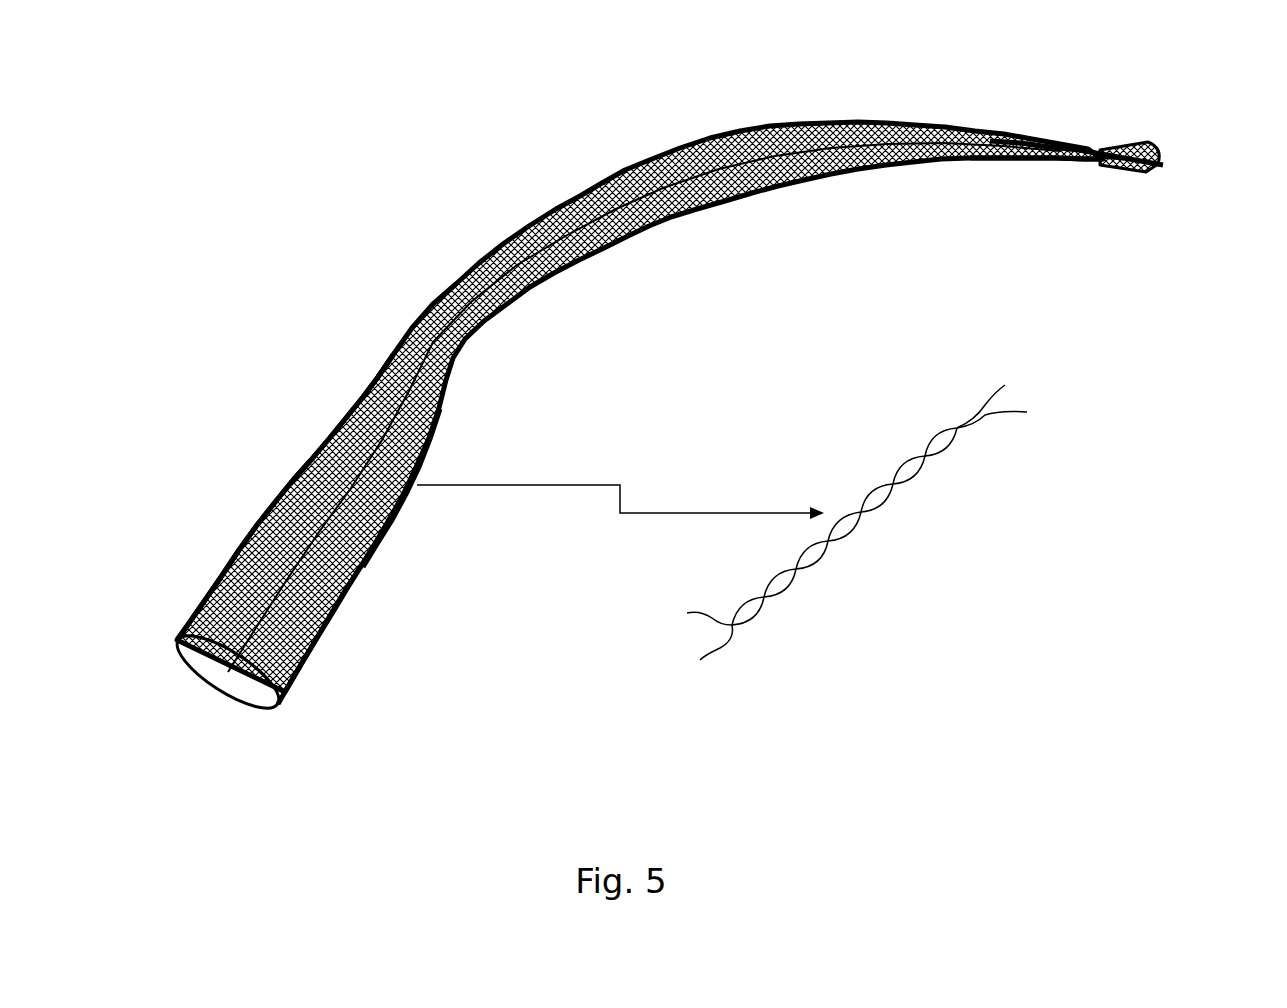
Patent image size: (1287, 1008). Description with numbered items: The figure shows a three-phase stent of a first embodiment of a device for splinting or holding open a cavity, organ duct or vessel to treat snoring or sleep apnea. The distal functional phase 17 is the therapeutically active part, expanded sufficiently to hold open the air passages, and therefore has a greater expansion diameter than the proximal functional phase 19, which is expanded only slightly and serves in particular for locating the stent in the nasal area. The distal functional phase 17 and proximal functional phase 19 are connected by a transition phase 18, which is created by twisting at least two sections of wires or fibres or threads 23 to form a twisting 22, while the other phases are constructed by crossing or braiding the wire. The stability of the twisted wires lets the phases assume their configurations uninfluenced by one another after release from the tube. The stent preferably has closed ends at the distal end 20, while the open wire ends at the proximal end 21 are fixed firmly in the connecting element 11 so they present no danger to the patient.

The connecting element 11 is at (1180, 175).
The distal functional phase 17 is at (220, 590).
The transition phase 18 is at (325, 470).
The proximal functional phase 19 is at (689, 135).
The distal end 20 is at (214, 684).
The proximal end 21 is at (1086, 125).
The twisting 22 is at (887, 546).
The wires or fibres or threads 23 is at (832, 520).